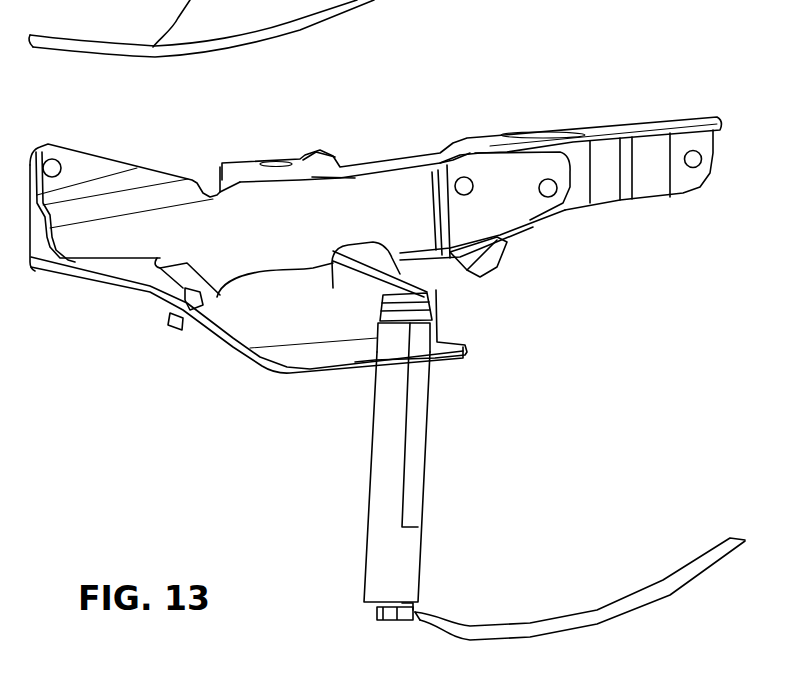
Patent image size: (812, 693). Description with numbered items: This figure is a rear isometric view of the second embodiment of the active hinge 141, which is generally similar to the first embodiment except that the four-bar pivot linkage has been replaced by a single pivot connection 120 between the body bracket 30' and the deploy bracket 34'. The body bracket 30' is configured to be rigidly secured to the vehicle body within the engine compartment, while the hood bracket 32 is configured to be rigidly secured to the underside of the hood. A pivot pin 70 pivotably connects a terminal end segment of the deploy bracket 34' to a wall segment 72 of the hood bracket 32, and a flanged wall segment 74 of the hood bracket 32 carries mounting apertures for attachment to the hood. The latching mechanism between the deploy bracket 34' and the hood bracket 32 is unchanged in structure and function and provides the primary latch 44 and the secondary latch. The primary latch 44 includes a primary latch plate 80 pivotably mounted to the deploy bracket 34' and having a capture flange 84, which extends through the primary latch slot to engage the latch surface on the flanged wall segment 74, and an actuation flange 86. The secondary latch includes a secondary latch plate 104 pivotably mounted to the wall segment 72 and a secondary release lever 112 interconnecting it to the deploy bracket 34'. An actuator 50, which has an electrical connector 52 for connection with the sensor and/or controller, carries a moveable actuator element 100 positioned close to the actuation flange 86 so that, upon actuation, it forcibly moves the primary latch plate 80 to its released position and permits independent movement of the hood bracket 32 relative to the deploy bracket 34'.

The seat assembly 141 is at (553, 90).
The hood bracket 32 is at (620, 118).
The flanged wall segment 74 is at (705, 118).
The single pivot connection 120 is at (56, 166).
The primary latch 44 is at (312, 147).
The capture flange 84 is at (330, 158).
The pivot pin 70 is at (548, 188).
The wall segment 72 is at (687, 186).
The secondary latch plate 104 is at (498, 260).
The secondary release lever 112 is at (465, 284).
The moveable actuator element 100 is at (436, 310).
The primary latch plate 80 is at (337, 273).
The actuation flange 86 is at (390, 285).
The deploy bracket 34' is at (135, 236).
The body bracket 30' is at (247, 333).
The actuator 50 is at (382, 449).
The electrical connector 52 is at (578, 613).